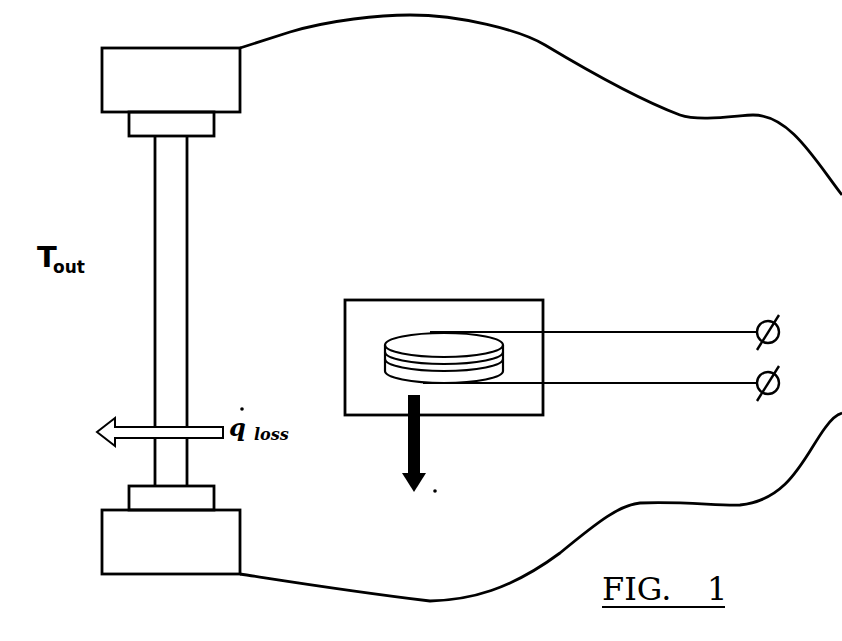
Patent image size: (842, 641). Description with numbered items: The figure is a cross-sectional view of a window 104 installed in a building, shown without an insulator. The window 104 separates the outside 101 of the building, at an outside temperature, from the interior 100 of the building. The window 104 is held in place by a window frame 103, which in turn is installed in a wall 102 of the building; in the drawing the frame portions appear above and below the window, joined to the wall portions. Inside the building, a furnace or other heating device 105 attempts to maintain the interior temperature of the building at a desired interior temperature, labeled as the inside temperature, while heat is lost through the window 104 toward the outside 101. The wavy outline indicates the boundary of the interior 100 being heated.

The interior 100 is at (615, 85).
The outside 101 is at (106, 354).
The wall 102 is at (114, 535).
The window frame 103 is at (138, 127).
The window 104 is at (155, 235).
The heating device 105 is at (510, 415).